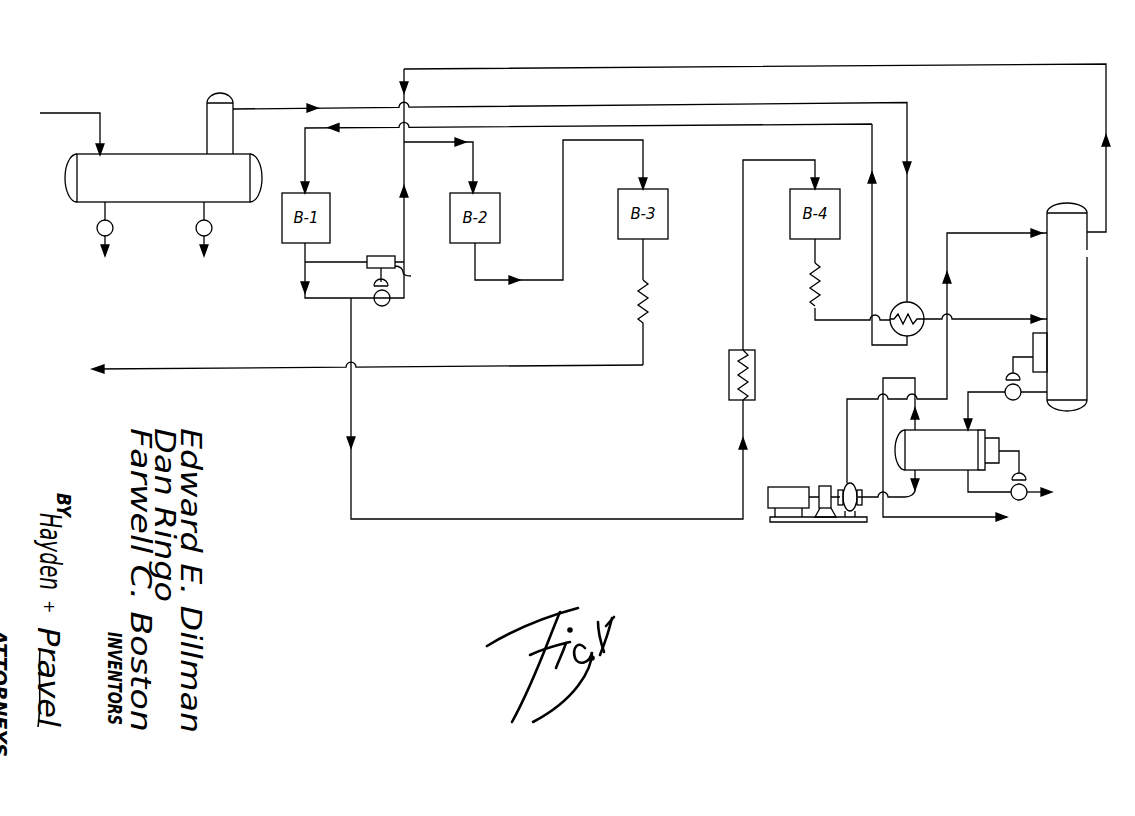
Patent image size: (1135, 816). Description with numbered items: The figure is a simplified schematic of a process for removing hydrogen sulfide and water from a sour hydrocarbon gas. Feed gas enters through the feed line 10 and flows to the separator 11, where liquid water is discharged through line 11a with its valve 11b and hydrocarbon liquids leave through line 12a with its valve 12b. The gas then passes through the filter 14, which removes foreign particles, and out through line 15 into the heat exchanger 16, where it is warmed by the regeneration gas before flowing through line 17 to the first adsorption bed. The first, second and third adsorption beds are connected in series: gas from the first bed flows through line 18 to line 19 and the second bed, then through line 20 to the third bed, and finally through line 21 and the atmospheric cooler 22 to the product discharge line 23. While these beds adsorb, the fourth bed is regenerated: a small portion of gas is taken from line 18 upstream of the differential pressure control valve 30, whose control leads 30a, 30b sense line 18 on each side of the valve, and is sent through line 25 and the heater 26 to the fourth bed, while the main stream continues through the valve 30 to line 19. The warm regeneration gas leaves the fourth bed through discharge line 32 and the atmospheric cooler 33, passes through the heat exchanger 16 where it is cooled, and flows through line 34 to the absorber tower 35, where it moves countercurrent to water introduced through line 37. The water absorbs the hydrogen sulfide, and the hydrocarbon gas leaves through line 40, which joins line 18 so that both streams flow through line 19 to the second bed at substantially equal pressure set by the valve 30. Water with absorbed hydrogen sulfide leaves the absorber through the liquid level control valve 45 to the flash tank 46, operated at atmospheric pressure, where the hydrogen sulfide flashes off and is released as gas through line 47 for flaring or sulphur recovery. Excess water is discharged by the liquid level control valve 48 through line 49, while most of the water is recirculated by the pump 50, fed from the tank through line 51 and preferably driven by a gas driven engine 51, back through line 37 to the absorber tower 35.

The feed line 10 is at (60, 113).
The separator 11 is at (155, 153).
The water discharge line 11a is at (97, 229).
The valve 11b is at (98, 236).
The hydrocarbon liquids line 12a is at (202, 226).
The valve 12b is at (202, 234).
The filter 14 is at (207, 100).
The line 15 is at (262, 108).
The heat exchanger 16 is at (918, 303).
The line 17 is at (697, 126).
The line 18 is at (305, 280).
The line 19 is at (475, 172).
The line 20 is at (563, 258).
The line 21 is at (643, 258).
The atmospheric cooler 22 is at (646, 298).
The product discharge line 23 is at (130, 368).
The line 25 is at (351, 405).
The heater 26 is at (729, 388).
The differential pressure control valve 30 is at (384, 306).
The control lead 30a is at (342, 262).
The control lead 30b is at (419, 278).
The discharge line 32 is at (815, 250).
The atmospheric cooler 33 is at (811, 275).
The line 34 is at (975, 319).
The absorber tower 35 is at (1087, 288).
The water line 37 is at (965, 233).
The line 40 is at (1106, 155).
The liquid level control valve 45 is at (1018, 400).
The flash tank 46 is at (935, 457).
The line 47 is at (917, 428).
The liquid level control valve 48 is at (1024, 499).
The line 49 is at (1035, 497).
The pump 50 is at (845, 485).
The line / gas driven engine 51 is at (790, 487).